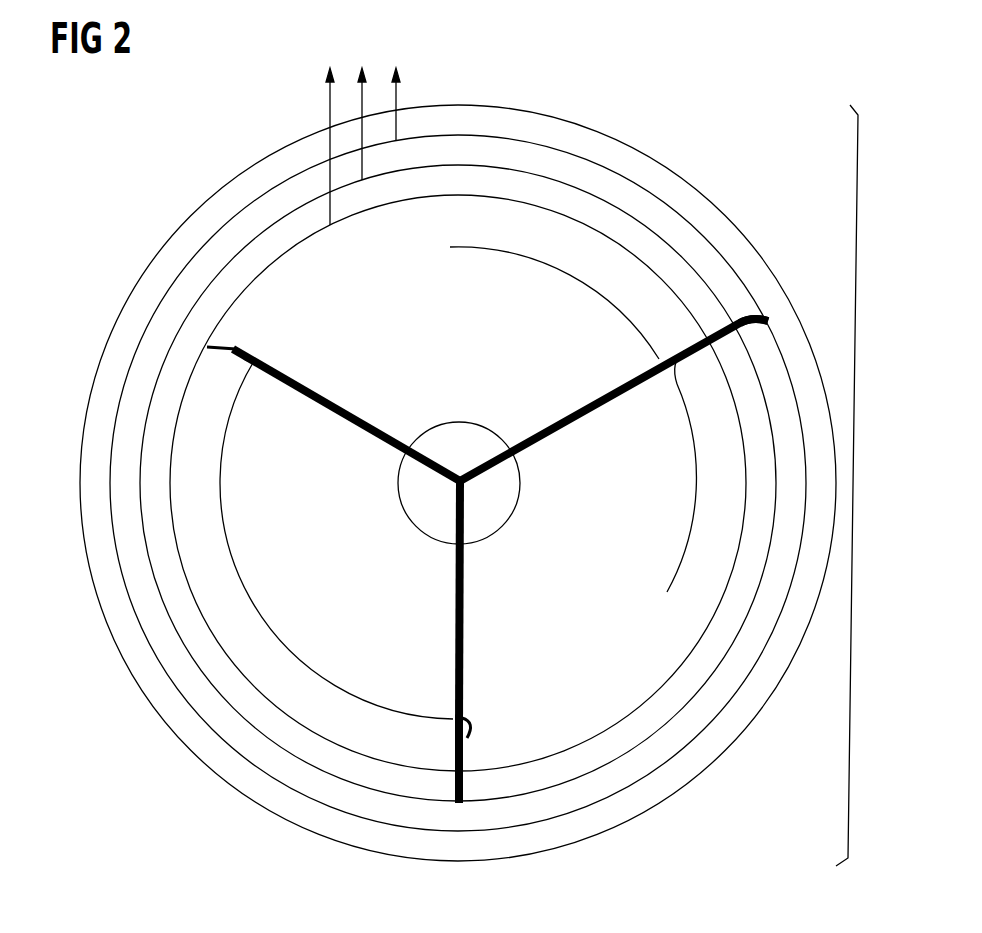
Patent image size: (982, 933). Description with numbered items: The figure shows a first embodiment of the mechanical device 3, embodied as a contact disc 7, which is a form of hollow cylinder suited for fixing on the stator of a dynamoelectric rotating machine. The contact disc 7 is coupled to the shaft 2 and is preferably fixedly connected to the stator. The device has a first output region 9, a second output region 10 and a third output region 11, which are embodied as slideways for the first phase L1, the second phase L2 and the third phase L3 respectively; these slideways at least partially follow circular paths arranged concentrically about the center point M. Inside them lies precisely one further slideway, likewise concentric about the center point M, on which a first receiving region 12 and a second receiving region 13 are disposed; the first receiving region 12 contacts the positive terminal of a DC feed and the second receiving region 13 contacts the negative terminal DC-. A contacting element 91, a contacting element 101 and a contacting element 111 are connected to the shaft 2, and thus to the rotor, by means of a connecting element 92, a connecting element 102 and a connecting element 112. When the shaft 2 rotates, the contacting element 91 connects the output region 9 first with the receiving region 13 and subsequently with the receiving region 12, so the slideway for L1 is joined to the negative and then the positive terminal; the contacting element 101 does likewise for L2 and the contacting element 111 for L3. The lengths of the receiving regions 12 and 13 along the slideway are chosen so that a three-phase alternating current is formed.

The shaft 2 is at (503, 507).
The mechanical device 3 is at (853, 478).
The contact disc 7 is at (183, 227).
The first output region 9 is at (127, 390).
The second output region 10 is at (173, 353).
The third output region 11 is at (220, 320).
The first receiving region 12 is at (228, 521).
The second receiving region 13 is at (692, 488).
The contacting element 91 is at (697, 340).
The connecting element 92 is at (600, 402).
The contacting element 101 is at (455, 752).
The connecting element 102 is at (455, 630).
The contacting element 111 is at (238, 348).
The connecting element 112 is at (347, 410).
The center point M is at (460, 478).
The first phase L1 is at (330, 129).
The second phase L2 is at (362, 107).
The third phase L3 is at (395, 87).
The negative terminal of the DC feed DC- is at (693, 450).